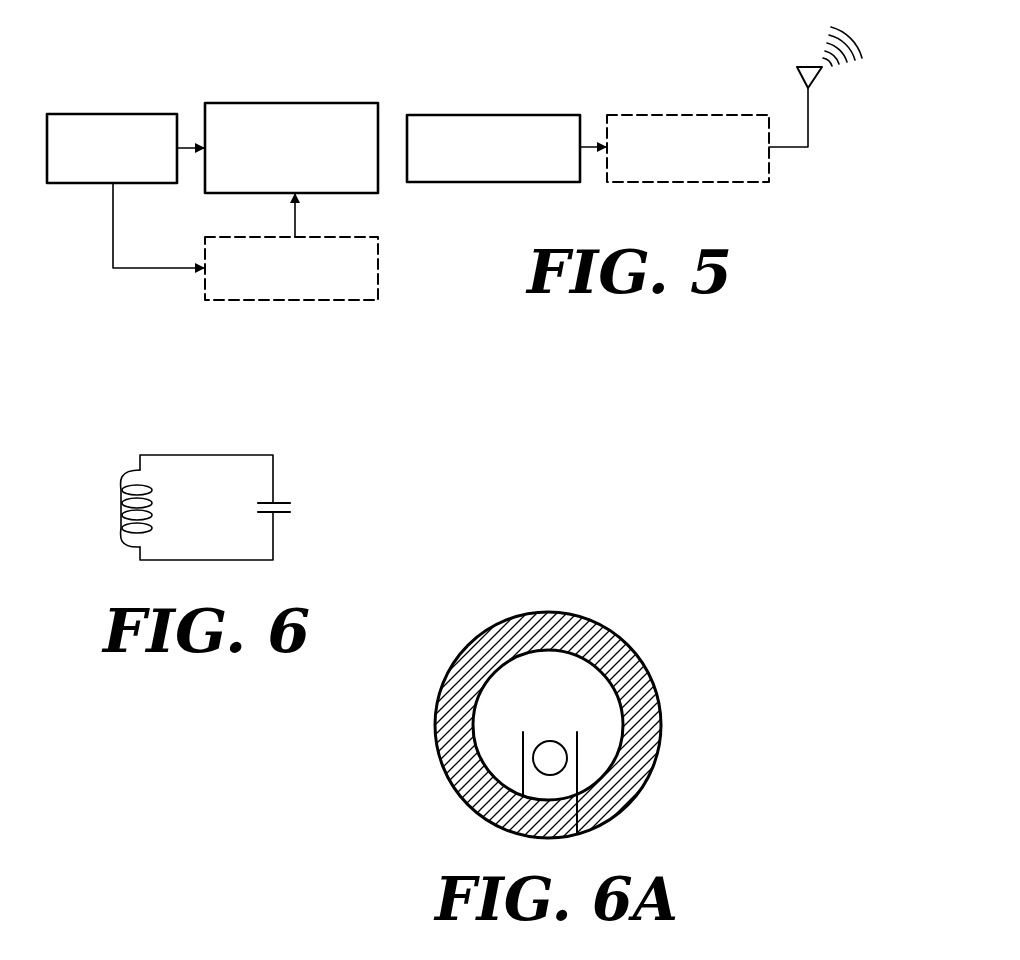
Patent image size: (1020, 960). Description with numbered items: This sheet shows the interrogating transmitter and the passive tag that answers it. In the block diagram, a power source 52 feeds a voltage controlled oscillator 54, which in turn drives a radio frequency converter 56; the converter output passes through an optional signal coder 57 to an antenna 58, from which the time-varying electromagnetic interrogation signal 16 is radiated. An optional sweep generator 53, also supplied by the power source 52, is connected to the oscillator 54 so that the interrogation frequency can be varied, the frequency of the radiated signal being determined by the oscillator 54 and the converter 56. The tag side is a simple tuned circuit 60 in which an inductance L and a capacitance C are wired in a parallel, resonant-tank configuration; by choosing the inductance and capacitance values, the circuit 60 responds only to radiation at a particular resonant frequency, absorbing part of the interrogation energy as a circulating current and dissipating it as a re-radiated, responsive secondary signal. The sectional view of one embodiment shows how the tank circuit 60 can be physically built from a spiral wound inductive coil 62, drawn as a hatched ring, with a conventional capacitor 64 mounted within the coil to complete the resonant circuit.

In FIG. 5, the transmitted signal / radio waves 16 is at (822, 40).
In FIG. 5, the power source 52 is at (102, 114).
In FIG. 5, the sweep generator 53 is at (315, 300).
In FIG. 5, the voltage controlled oscillator 54 is at (293, 103).
In FIG. 5, the radio frequency converter 56 is at (503, 115).
In FIG. 5, the signal coder 57 is at (683, 115).
In FIG. 5, the antenna 58 is at (803, 78).
In FIG. 6, the tuned circuit 60 is at (196, 481).
In FIG. 6A, the tuned circuit 60 is at (555, 717).
In FIG. 6A, the spiral wound inductive coil 62 is at (620, 662).
In FIG. 6A, the capacitor 64 is at (548, 760).
In FIG. 6, the inductance L is at (120, 518).
In FIG. 6, the capacitance C is at (277, 505).